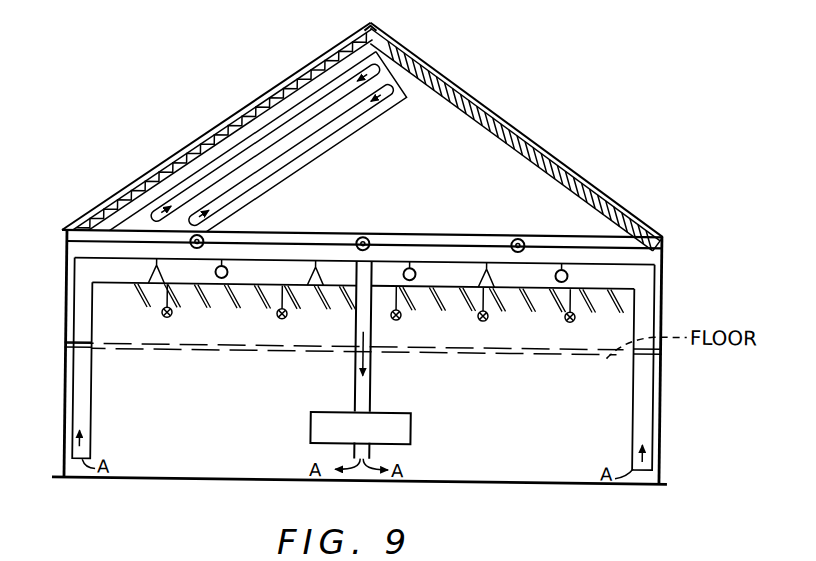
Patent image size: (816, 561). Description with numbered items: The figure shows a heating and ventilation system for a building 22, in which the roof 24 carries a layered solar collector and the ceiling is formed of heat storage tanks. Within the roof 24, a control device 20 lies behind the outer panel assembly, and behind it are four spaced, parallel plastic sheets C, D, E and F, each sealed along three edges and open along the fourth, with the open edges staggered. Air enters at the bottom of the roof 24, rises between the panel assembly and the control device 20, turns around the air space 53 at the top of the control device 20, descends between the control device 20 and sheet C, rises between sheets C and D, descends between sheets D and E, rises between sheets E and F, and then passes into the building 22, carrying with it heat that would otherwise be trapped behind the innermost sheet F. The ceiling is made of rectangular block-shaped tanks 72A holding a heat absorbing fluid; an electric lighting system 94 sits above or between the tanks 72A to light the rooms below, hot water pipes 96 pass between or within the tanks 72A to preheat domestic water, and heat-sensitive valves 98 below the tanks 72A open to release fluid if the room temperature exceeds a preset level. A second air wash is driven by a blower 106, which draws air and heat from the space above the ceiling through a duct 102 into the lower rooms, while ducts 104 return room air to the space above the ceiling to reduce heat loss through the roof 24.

The control device 20 is at (220, 133).
The building 22 is at (666, 432).
The roof 24 is at (223, 133).
The air space 53 is at (375, 31).
The sheet C is at (265, 142).
The sheet D is at (242, 141).
The sheet E is at (291, 154).
The sheet F is at (291, 142).
The tank 72A is at (389, 264).
The electric lighting system 94 is at (203, 237).
The hot water pipe 96 is at (413, 262).
The heat-sensitive valve 98 is at (481, 315).
The duct 102 is at (372, 382).
The duct 104 is at (85, 396).
The blower 106 is at (334, 408).